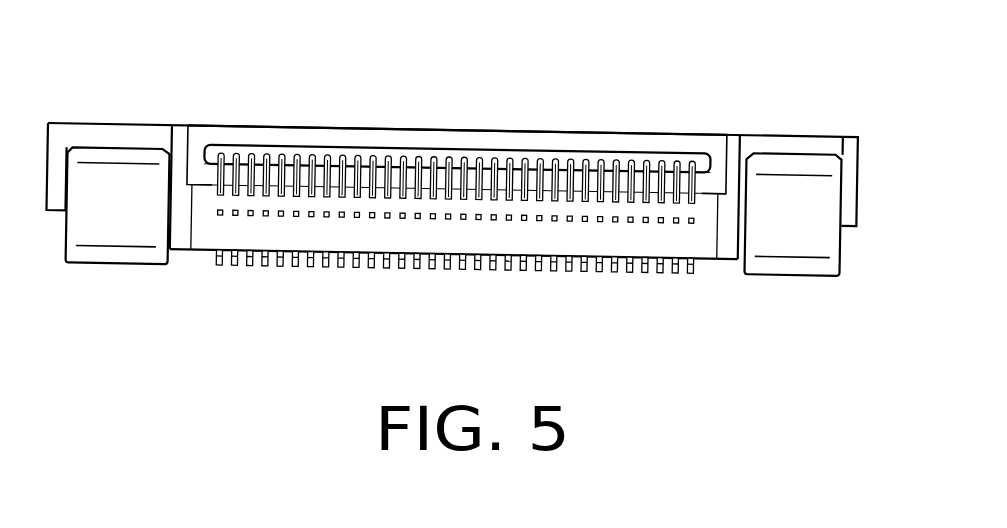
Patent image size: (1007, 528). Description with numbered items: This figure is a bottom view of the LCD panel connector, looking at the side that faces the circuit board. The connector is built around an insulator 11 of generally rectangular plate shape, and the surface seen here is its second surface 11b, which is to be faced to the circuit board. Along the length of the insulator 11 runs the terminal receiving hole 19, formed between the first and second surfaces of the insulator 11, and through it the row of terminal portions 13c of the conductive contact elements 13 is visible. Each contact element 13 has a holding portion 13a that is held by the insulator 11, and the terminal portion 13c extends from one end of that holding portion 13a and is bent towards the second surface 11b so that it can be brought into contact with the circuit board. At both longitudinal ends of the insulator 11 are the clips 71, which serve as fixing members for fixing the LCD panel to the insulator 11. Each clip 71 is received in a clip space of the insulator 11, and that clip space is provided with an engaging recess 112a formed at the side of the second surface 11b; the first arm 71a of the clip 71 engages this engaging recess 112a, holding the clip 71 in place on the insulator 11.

The insulator 11 is at (210, 233).
The second surface 11b is at (548, 138).
The engaging recess 112a is at (138, 130).
The terminal receiving hole 19 is at (405, 143).
The contact element 13 is at (503, 262).
The holding portion 13a is at (383, 262).
The terminal portion 13c is at (322, 142).
The clip 71 is at (133, 262).
The first arm 71a is at (92, 222).